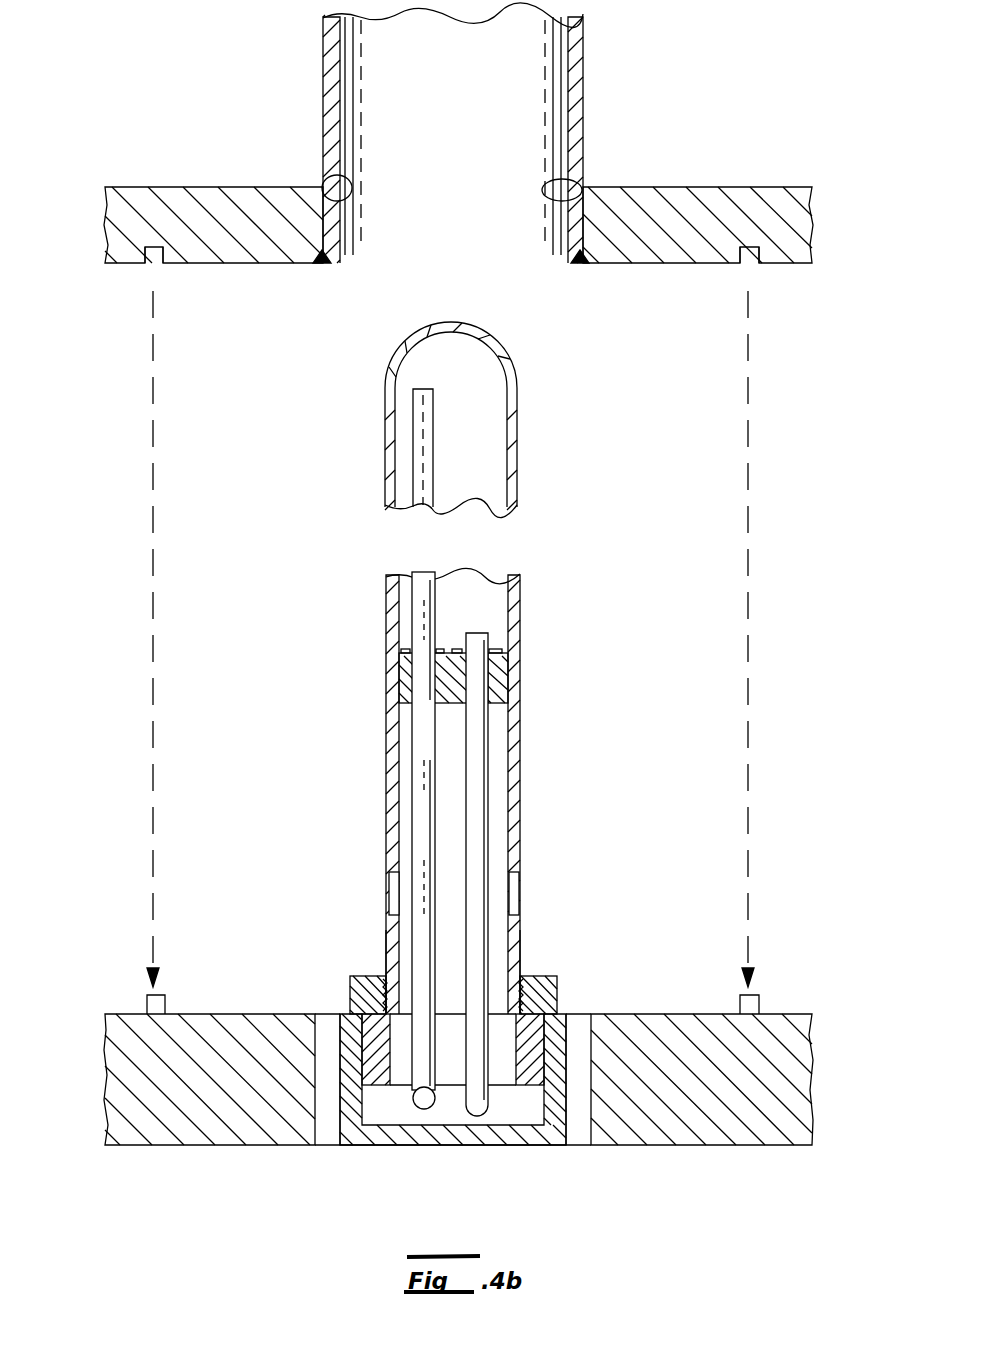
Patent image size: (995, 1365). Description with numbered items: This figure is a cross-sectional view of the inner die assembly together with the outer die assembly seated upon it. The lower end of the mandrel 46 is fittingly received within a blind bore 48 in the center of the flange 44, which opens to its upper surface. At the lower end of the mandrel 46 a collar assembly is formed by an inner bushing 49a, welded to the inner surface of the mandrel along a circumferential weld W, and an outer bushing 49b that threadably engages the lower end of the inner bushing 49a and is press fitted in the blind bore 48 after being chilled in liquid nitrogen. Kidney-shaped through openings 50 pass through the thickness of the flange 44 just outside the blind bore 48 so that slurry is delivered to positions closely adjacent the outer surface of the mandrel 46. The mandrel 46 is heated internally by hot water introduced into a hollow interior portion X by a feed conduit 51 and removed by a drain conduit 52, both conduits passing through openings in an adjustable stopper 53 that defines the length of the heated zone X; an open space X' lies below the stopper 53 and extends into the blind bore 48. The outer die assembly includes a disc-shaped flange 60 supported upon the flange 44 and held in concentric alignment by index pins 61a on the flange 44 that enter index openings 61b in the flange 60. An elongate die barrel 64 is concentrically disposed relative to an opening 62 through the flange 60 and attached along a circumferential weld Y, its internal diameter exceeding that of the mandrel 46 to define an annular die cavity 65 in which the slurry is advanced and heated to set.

The flange 44 is at (190, 1123).
The mandrel 46 is at (518, 592).
The blind bore 48 is at (500, 1115).
The inner bushing 49a is at (386, 940).
The outer bushing 49b is at (350, 990).
The kidney-shaped through openings 50 is at (327, 1133).
The feed conduit 51 is at (415, 736).
The drain conduit 52 is at (480, 737).
The adjustable stopper 53 is at (503, 665).
The disc-shaped flange 60 is at (237, 186).
The index pins 61a is at (145, 1005).
The index openings 61b is at (150, 265).
The opening 62 is at (330, 176).
The die barrel 64 is at (583, 112).
The die cavity 65 is at (452, 76).
The hollow interior portion X is at (467, 420).
The open space X' is at (501, 1010).
The circumferential weld Y is at (322, 265).
The circumferential weld W is at (390, 915).